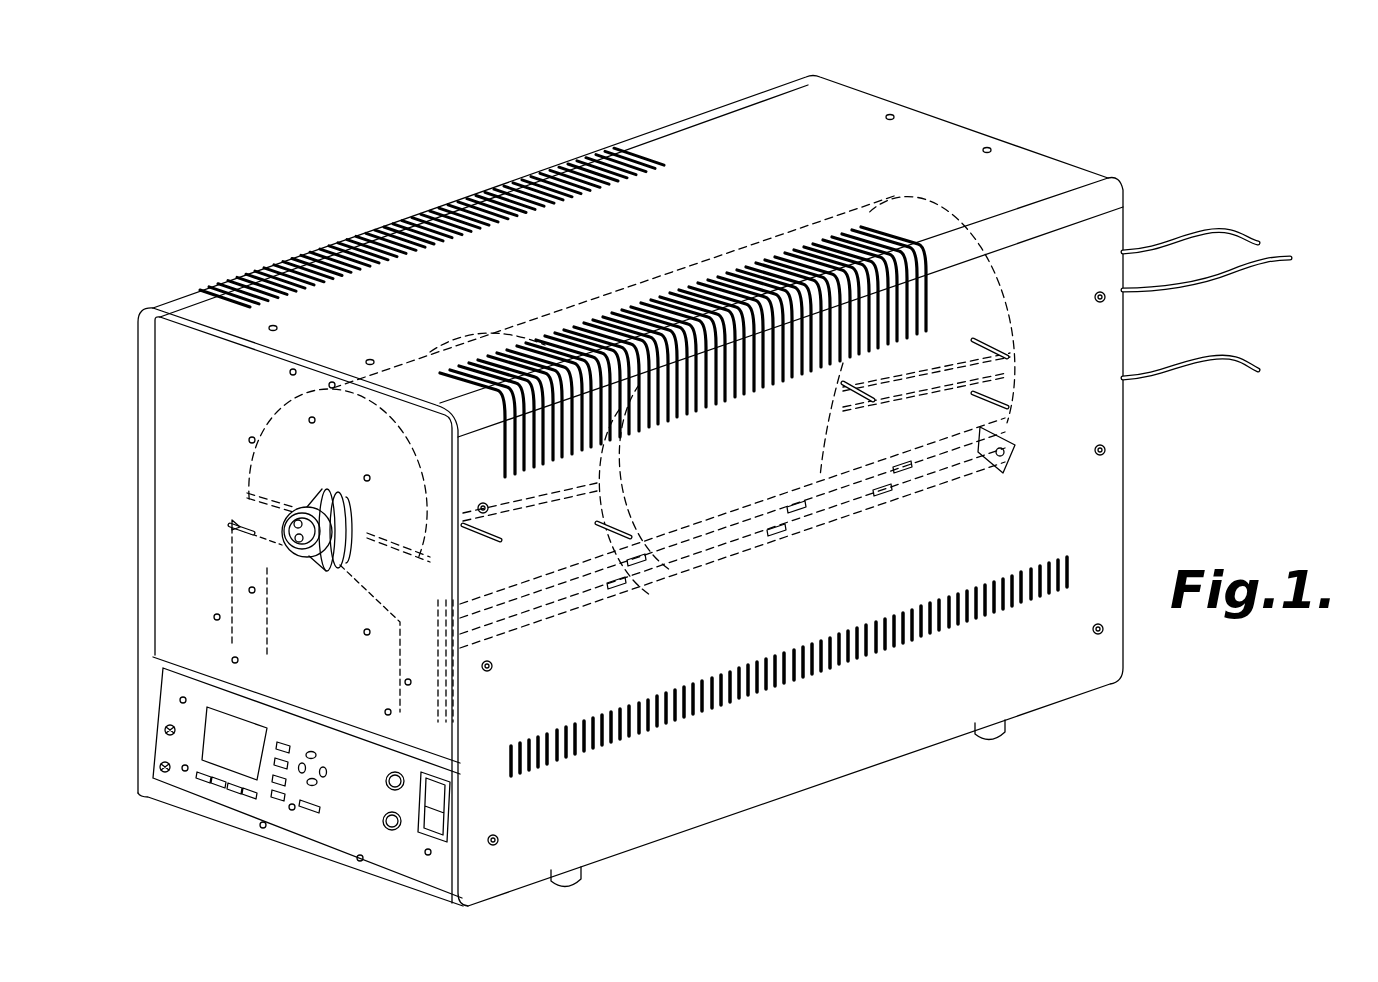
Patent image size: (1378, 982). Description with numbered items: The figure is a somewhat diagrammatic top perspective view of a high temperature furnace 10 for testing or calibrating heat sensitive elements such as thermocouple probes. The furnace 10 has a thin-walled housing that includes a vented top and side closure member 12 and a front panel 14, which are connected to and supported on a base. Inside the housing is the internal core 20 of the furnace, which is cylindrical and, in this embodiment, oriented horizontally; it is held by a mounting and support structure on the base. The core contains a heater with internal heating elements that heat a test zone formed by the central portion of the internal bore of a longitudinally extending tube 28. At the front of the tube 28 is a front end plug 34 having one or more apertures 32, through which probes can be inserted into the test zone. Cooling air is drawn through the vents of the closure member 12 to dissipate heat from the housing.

The furnace 10 is at (363, 199).
The vented top and side closure member 12 is at (930, 127).
The front panel 14 is at (170, 394).
The internal core 20 is at (779, 228).
The tube 28 is at (305, 508).
The apertures 32 is at (288, 523).
The front end plug 34 is at (312, 560).